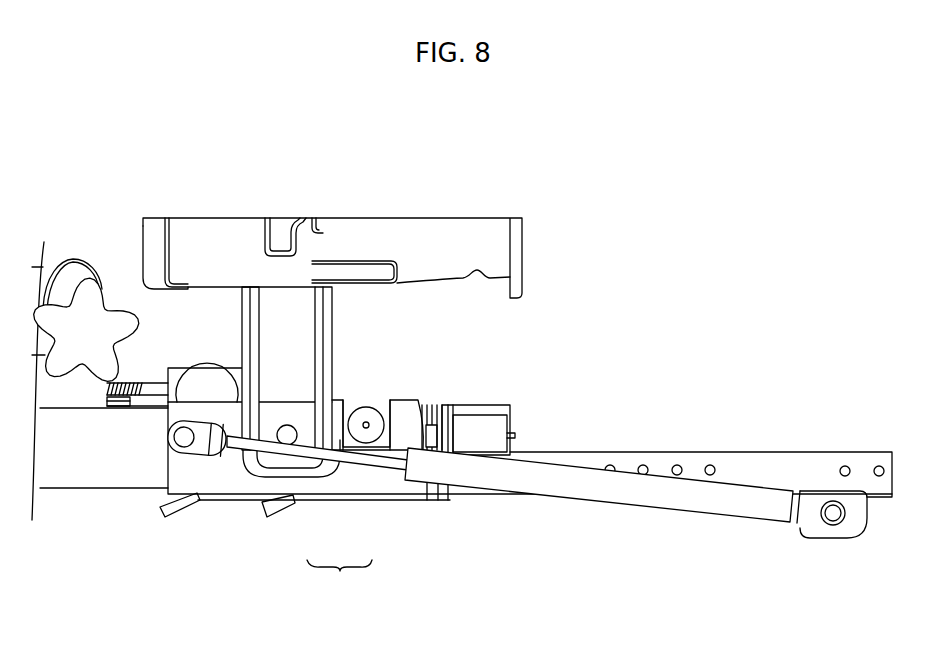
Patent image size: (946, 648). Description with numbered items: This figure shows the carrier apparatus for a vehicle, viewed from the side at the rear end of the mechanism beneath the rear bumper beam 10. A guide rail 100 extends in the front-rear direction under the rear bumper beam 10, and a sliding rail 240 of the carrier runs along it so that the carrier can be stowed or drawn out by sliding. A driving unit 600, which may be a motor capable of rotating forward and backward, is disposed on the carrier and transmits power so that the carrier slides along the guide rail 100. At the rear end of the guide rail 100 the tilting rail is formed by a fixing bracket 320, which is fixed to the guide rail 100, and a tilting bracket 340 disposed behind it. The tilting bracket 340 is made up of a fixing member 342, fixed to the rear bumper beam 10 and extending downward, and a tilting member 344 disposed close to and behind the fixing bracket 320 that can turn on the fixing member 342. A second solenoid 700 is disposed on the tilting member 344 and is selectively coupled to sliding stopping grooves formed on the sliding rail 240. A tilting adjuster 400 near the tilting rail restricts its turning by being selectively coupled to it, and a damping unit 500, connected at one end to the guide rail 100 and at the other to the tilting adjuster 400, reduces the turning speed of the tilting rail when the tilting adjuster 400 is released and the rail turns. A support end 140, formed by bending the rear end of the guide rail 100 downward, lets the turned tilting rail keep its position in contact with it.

The rear bumper beam 10 is at (367, 243).
The guide rail 100 is at (788, 467).
The support end 140 is at (178, 512).
The sliding rail 240 is at (73, 467).
The fixing bracket 320 is at (521, 421).
The tilting bracket 340 is at (287, 508).
The fixing member 342 is at (308, 446).
The tilting member 344 is at (368, 470).
The tilting adjuster 400 is at (492, 427).
The damping unit 500 is at (558, 480).
The driving unit 600 is at (193, 390).
The second solenoid 700 is at (372, 415).